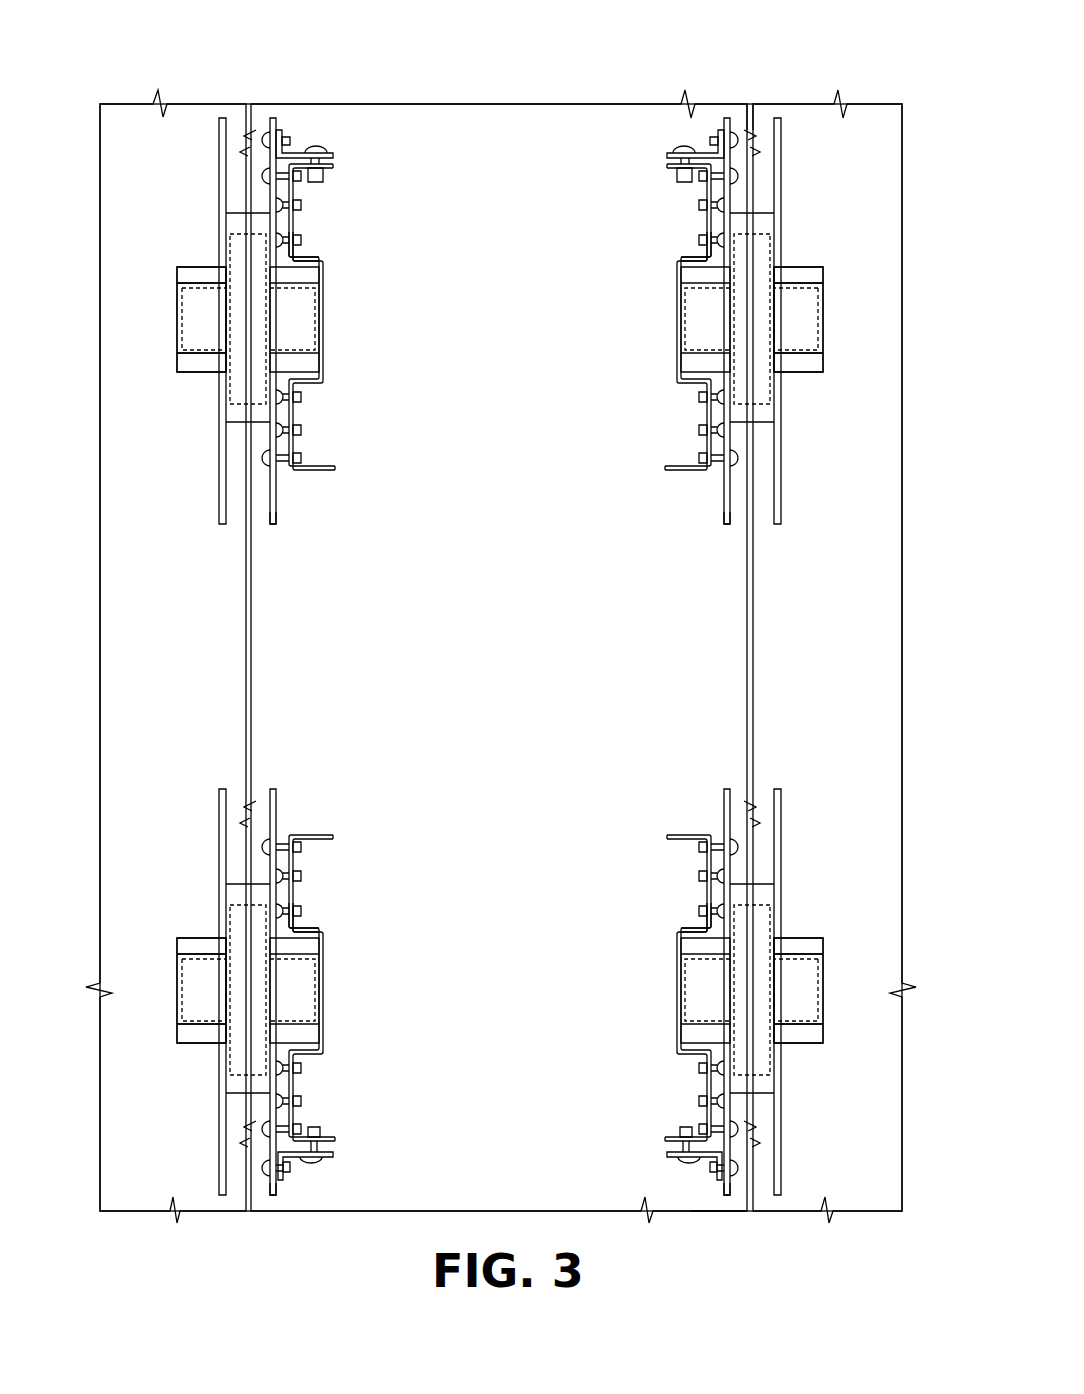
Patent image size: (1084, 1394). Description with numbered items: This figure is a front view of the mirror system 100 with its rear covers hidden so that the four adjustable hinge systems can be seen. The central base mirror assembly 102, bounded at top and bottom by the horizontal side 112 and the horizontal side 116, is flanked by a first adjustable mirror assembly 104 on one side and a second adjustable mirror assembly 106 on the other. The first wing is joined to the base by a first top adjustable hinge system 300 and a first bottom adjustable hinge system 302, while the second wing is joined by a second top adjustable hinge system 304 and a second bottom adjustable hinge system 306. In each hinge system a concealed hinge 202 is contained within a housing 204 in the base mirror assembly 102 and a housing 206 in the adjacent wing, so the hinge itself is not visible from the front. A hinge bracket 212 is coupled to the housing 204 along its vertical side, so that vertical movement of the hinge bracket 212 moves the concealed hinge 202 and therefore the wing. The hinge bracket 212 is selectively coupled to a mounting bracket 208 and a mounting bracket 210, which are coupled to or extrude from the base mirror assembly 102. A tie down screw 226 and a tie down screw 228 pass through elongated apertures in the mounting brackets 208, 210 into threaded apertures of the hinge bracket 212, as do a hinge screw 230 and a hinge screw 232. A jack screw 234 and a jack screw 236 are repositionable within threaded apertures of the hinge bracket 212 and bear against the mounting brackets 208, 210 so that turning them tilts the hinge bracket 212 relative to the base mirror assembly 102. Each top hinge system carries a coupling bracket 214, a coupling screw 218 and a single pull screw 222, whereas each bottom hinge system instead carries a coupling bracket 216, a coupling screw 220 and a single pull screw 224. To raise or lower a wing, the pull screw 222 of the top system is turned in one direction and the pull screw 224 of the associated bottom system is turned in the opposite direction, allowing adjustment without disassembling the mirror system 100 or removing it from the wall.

The mirror system 100 is at (100, 100).
The base mirror assembly 102 is at (412, 104).
The adjustable mirror assembly 104 is at (852, 212).
The adjustable mirror assembly 106 is at (148, 210).
The horizontal side 112 is at (720, 104).
The horizontal side 116 is at (708, 1212).
The concealed hinge 202 is at (180, 305).
The housing 204 is at (293, 262).
The housing 206 is at (190, 267).
The mounting bracket 208 is at (273, 117).
The mounting bracket 210 is at (276, 522).
The hinge bracket 212 is at (325, 267).
The coupling bracket 214 is at (333, 156).
The coupling bracket 216 is at (335, 1153).
The coupling screw 218 is at (290, 141).
The coupling screw 220 is at (291, 1168).
The pull screw 222 is at (324, 173).
The pull screw 224 is at (321, 1132).
The tie down screw 226 is at (320, 185).
The tie down screw 228 is at (301, 457).
The hinge screw 230 is at (301, 240).
The hinge screw 232 is at (301, 397).
The jack screw 234 is at (301, 205).
The jack screw 236 is at (301, 430).
The first top adjustable hinge system 300 is at (203, 218).
The first bottom adjustable hinge system 302 is at (205, 890).
The second top adjustable hinge system 304 is at (800, 223).
The second bottom adjustable hinge system 306 is at (800, 842).